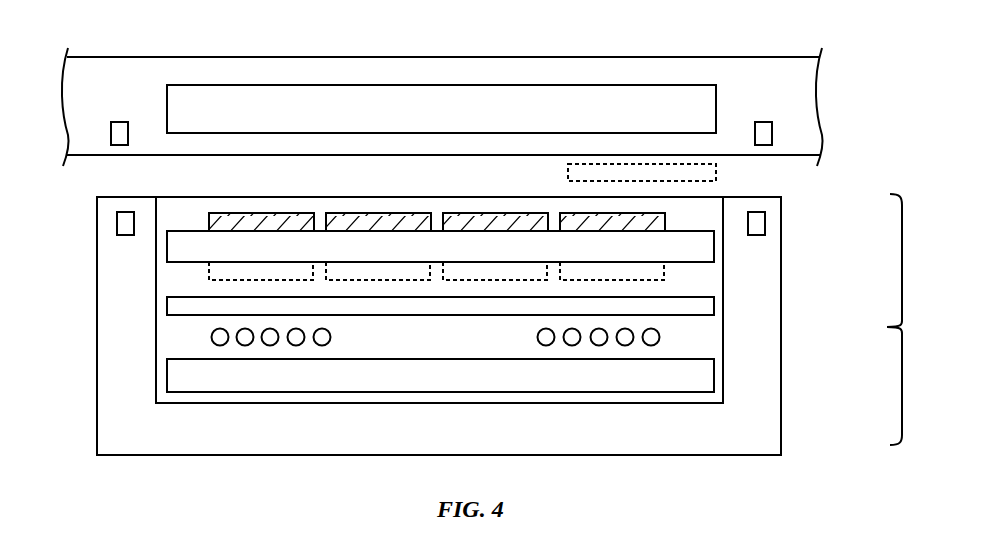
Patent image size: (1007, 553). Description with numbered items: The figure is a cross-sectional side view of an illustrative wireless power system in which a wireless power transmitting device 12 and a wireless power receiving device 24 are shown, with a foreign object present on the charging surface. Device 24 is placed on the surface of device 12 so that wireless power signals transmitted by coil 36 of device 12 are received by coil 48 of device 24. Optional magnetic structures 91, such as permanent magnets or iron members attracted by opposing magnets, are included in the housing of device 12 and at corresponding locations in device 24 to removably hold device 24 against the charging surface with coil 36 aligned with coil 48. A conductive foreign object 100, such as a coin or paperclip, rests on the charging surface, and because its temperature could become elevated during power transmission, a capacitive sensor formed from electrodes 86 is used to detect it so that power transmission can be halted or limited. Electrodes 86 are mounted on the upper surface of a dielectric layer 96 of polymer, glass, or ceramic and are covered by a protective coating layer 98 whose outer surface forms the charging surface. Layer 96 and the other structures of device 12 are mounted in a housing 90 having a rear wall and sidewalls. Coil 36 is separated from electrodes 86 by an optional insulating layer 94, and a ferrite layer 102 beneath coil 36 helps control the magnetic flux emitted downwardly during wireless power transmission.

The device 12 is at (912, 319).
The device 24 is at (795, 57).
The coil 36 is at (673, 337).
The coil 48 is at (706, 101).
The electrodes 86 is at (343, 225).
The housing 90 is at (781, 268).
The magnetic structures 91 is at (111, 133).
The insulating layer 94 is at (714, 305).
The dielectric layer 96 is at (167, 243).
The coating layer 98 is at (165, 338).
The foreign object 100 is at (716, 172).
The ferrite layer 102 is at (714, 375).